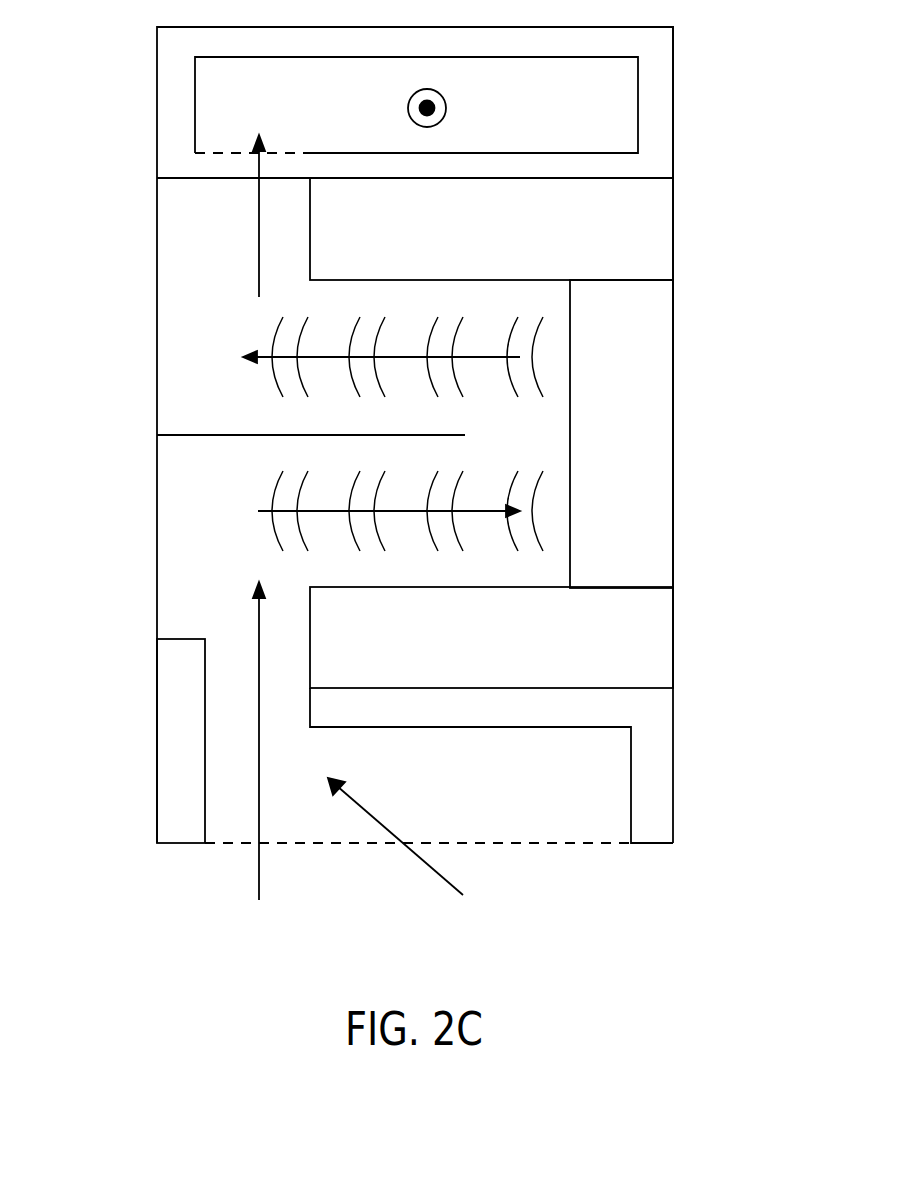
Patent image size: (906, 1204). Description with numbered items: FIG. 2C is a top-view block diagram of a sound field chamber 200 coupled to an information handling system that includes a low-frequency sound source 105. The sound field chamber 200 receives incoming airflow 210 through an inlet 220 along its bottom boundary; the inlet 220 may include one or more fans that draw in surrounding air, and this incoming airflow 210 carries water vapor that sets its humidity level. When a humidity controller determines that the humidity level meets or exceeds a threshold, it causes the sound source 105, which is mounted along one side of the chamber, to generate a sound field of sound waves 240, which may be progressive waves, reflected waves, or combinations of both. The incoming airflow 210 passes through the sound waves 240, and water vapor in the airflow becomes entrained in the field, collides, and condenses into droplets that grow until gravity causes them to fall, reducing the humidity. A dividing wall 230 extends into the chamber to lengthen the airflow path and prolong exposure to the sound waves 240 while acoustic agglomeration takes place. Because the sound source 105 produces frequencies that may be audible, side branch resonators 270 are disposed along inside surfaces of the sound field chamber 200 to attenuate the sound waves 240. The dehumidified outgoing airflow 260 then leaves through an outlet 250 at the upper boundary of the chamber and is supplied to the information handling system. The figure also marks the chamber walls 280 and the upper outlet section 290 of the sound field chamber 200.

The sound field chamber 200 is at (135, 27).
The sound source 105 is at (621, 434).
The incoming airflow 210 is at (258, 890).
The inlet 220 is at (538, 843).
The dividing wall 230 is at (269, 433).
The sound waves 240 is at (277, 490).
The outlet 250 is at (243, 180).
The outgoing airflow 260 is at (408, 107).
The side branch resonators 270 is at (491, 433).
The wall 280 is at (637, 115).
The lid section 290 is at (687, 27).